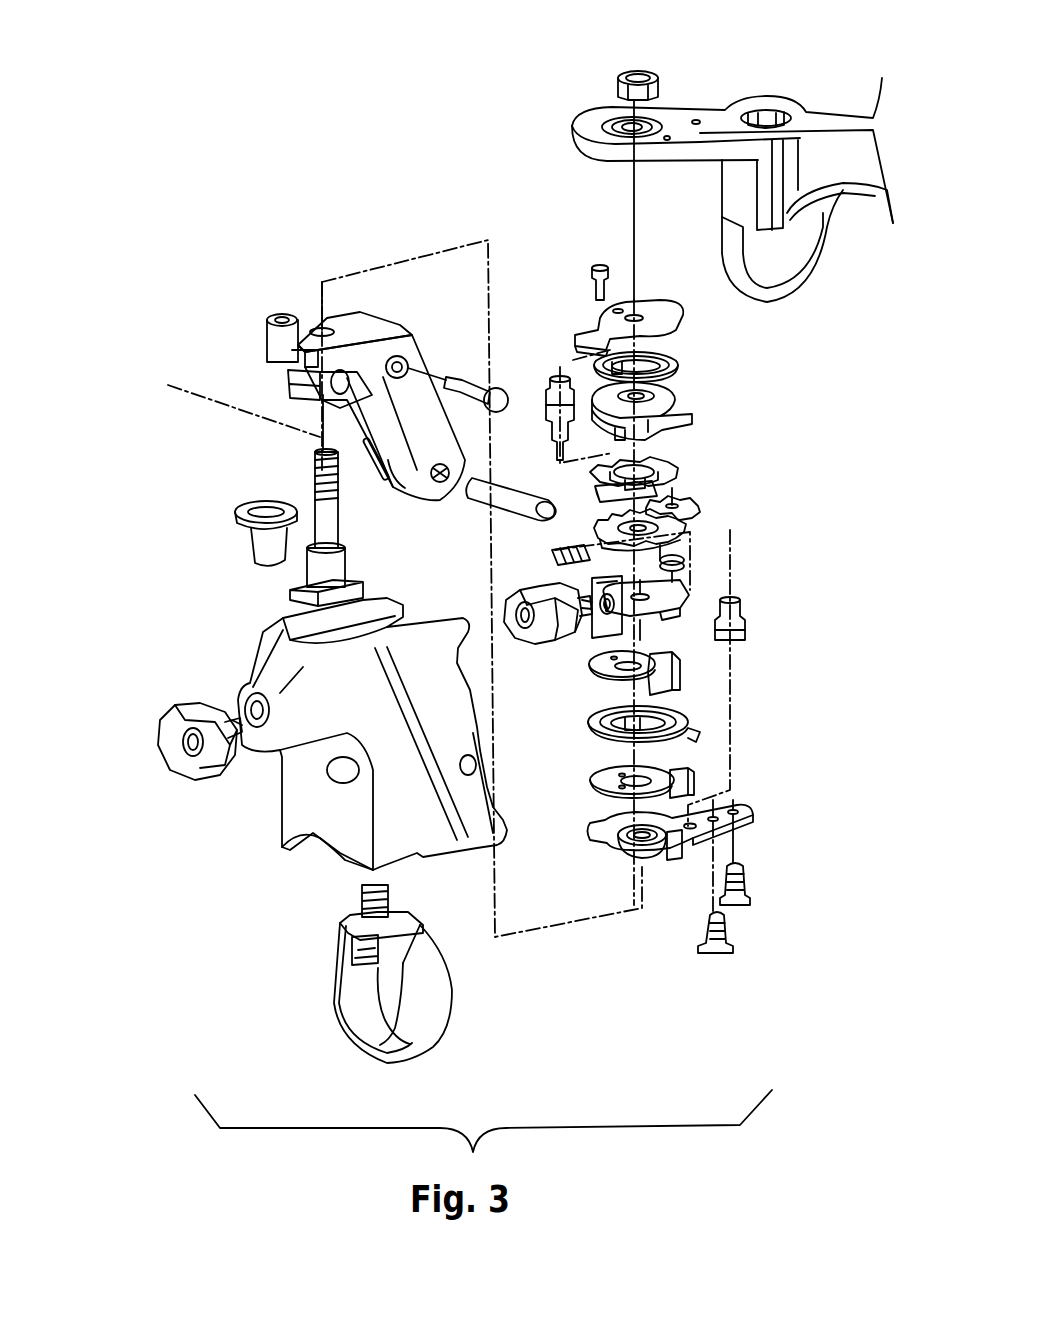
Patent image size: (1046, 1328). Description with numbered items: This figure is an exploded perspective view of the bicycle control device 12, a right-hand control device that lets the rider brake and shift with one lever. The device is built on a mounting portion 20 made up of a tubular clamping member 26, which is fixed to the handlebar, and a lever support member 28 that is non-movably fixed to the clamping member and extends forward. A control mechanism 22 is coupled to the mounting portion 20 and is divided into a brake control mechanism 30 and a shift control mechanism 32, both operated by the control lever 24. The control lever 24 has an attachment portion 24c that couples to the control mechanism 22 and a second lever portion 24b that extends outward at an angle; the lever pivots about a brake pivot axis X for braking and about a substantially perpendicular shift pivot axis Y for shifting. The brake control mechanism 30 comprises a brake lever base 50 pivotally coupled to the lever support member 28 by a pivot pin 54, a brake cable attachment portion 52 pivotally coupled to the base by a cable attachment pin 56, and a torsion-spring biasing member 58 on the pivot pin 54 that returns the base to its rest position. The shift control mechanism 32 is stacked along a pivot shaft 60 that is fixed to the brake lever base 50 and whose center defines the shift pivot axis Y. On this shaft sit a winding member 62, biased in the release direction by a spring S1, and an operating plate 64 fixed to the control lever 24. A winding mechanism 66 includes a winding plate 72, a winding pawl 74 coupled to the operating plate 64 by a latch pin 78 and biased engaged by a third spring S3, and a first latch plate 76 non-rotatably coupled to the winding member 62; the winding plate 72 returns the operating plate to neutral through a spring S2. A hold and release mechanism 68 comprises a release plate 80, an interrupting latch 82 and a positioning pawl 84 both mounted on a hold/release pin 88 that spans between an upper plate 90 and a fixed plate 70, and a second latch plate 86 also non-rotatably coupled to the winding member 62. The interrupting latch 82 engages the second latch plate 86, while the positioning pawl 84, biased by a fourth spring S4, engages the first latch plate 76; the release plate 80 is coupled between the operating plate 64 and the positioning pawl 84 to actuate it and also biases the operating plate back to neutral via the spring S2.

The bicycle control device 12 is at (207, 207).
The mounting portion 20 is at (210, 862).
The control mechanism 22 is at (395, 190).
The control lever 24 is at (779, 93).
The second lever portion 24b is at (813, 288).
The attachment portion 24c is at (662, 111).
The tubular clamping member 26 is at (332, 982).
The lever support member 28 is at (280, 837).
The brake control mechanism 30 is at (306, 292).
The shift control mechanism 32 is at (522, 272).
The brake lever base 50 is at (413, 335).
The brake cable attachment portion 52 is at (283, 393).
The pivot pin 54 is at (447, 479).
The cable attachment pin 56 is at (496, 387).
The biasing member 58 is at (404, 494).
The pivot shaft 60 is at (348, 557).
The winding member 62 is at (670, 405).
The operating plate 64 is at (748, 829).
The winding mechanism 66 is at (712, 513).
The hold and release mechanism 68 is at (582, 493).
The fixed plate 70 is at (672, 610).
The winding plate 72 is at (672, 781).
The winding pawl 74 is at (686, 500).
The first latch plate 76 is at (668, 537).
The latch pin 78 is at (745, 626).
The release plate 80 is at (680, 662).
The interrupting latch 82 is at (668, 486).
The positioning pawl 84 is at (600, 540).
The second latch plate 86 is at (678, 456).
The hold/release pin 88 is at (545, 410).
The upper plate 90 is at (680, 318).
The spring S1 is at (676, 362).
The spring S2 is at (680, 718).
The third spring S3 is at (686, 571).
The fourth spring S4 is at (556, 556).
The brake pivot axis X is at (208, 402).
The shift pivot axis Y is at (645, 893).